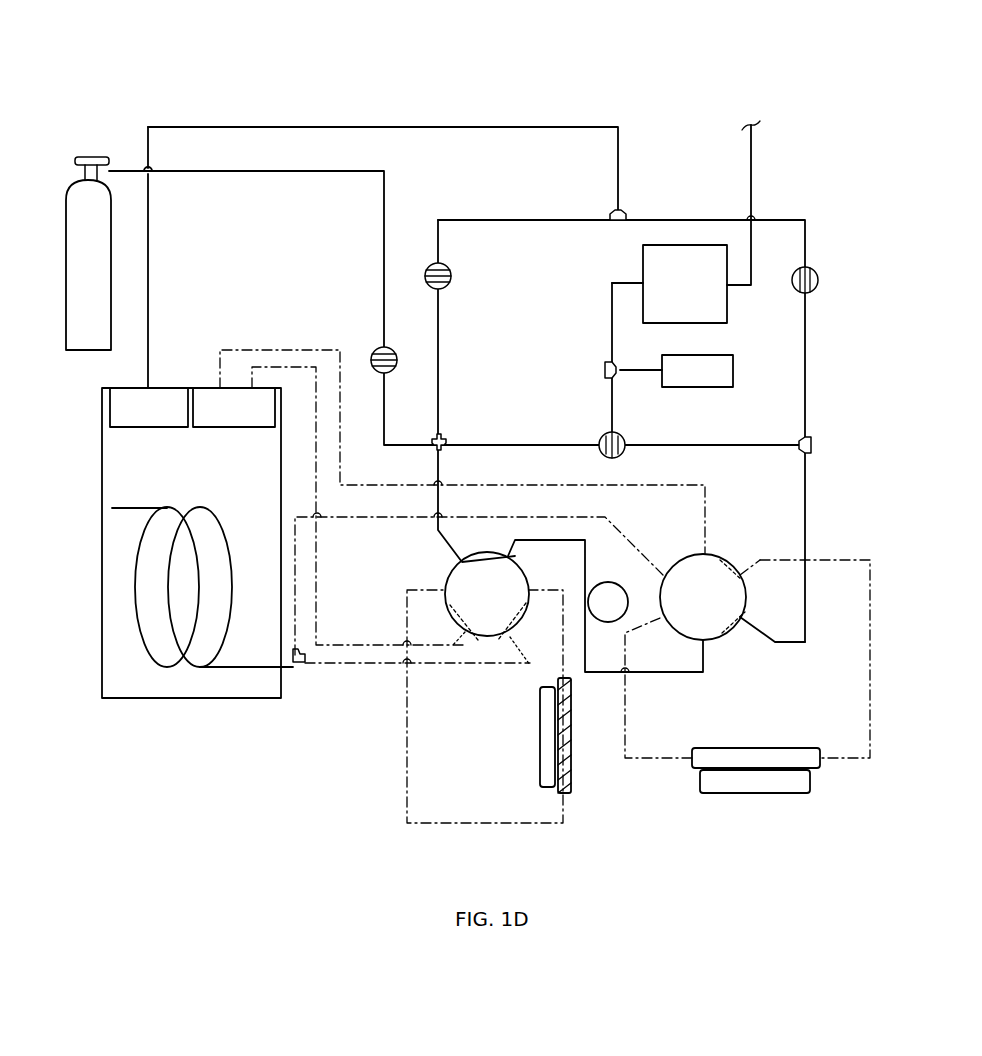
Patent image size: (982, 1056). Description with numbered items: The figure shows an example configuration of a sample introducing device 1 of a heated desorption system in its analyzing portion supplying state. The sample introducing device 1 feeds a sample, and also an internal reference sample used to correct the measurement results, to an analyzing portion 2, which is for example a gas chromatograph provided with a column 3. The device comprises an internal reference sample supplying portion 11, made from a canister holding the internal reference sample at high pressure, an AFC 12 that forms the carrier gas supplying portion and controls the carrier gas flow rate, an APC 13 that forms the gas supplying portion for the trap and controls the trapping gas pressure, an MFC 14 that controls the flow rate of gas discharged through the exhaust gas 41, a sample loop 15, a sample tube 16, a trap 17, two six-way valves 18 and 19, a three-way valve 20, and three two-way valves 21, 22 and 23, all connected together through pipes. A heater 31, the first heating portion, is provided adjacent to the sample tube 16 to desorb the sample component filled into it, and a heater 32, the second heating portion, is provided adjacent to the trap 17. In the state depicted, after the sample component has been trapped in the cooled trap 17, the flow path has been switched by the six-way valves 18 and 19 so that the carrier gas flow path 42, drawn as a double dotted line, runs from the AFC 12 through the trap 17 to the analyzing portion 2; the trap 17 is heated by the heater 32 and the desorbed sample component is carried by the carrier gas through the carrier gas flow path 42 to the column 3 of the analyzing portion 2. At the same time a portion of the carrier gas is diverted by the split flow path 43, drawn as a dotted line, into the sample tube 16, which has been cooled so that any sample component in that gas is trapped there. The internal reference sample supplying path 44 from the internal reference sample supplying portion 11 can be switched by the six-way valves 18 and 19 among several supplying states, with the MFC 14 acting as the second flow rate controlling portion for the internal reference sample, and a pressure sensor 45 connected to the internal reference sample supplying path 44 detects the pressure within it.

The sample introducing device 1 is at (662, 92).
The analyzing portion 2 is at (178, 705).
The column 3 is at (140, 633).
The internal reference sample supplying portion 11 is at (84, 350).
The AFC (Automatic Flow Controller) 12 is at (236, 427).
The APC (Automatic Pressure Controller) 13 is at (149, 427).
The MFC (Mass Flow Controller) 14 is at (643, 262).
The sample loop 15 is at (608, 582).
The sample tube 16 is at (757, 748).
The trap 17 is at (571, 780).
The six-way valve 18 is at (450, 577).
The six-way valve 19 is at (728, 562).
The three-way valve 20 is at (603, 433).
The two-way valve 21 is at (376, 351).
The two-way valve 22 is at (449, 285).
The two-way valve 23 is at (812, 291).
The heater (first heating portion) 31 is at (758, 793).
The heater (second heating portion) 32 is at (540, 735).
The exhaust gas 41 is at (751, 168).
The carrier gas flow path 42 is at (338, 675).
The split flow path 43 is at (357, 520).
The internal reference sample supplying path 44 is at (277, 171).
The pressure sensor 45 is at (723, 387).